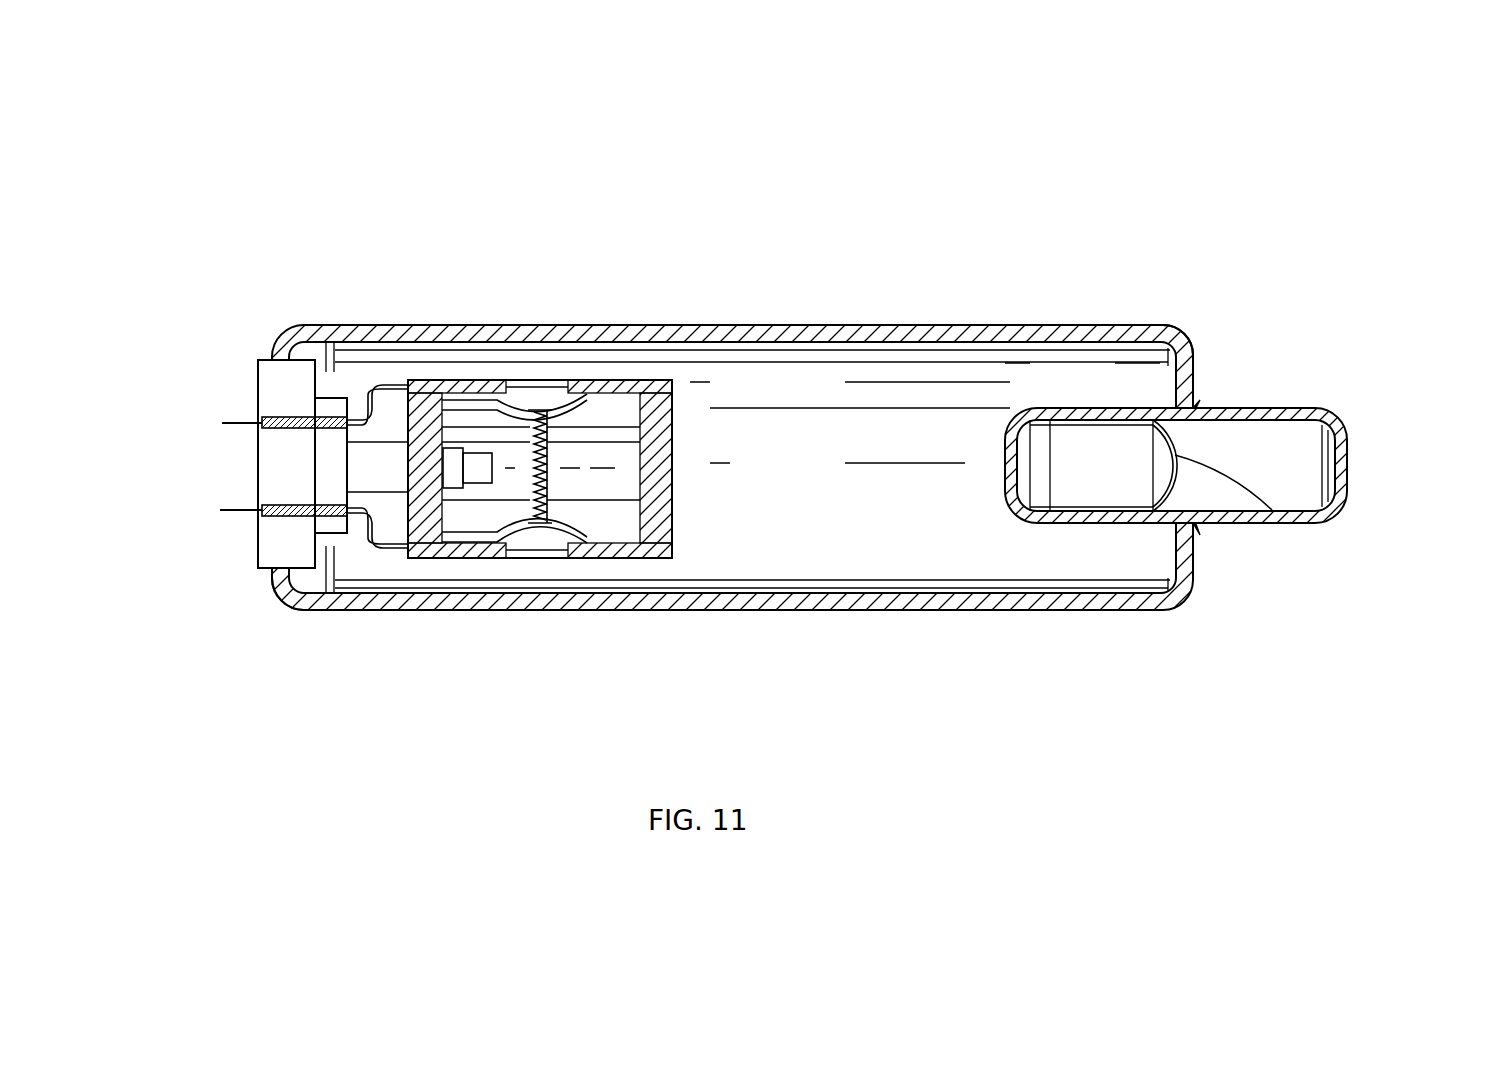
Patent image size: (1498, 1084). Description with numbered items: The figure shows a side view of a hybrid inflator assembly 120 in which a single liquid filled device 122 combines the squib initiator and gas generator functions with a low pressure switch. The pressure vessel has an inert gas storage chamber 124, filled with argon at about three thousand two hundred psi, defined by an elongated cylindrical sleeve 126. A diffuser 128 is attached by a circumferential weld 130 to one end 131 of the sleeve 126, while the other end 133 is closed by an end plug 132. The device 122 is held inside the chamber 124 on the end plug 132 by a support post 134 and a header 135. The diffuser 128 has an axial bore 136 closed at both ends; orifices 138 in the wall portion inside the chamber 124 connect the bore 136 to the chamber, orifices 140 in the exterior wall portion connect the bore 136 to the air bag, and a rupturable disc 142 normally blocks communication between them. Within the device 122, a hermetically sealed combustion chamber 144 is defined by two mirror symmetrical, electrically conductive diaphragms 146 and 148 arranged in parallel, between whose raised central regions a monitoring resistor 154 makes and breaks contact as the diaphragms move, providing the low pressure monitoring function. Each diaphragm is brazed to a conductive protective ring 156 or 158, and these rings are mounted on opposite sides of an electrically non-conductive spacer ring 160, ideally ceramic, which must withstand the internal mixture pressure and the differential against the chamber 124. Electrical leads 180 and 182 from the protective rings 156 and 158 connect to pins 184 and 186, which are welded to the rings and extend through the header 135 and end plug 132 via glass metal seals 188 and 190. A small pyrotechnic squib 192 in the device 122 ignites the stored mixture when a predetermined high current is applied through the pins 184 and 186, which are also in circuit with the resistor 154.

The hybrid inflator assembly 120 is at (797, 312).
The single liquid filled device 122 is at (620, 378).
The inert gas storage chamber 124 is at (970, 540).
The elongated cylindrical sleeve 126 is at (1008, 324).
The diffuser 128 is at (1352, 472).
The circumferential weld 130 is at (1200, 540).
The end of sleeve 131 is at (1183, 335).
The end plug 132 is at (255, 440).
The other end of sleeve 133 is at (280, 596).
The support post 134 is at (352, 398).
The header 135 is at (330, 463).
The axial bore 136 is at (1140, 505).
The orifices 138 is at (1075, 410).
The orifices 140 is at (1287, 408).
The rupturable disc 142 is at (1280, 517).
The combustion chamber 144 is at (462, 545).
The first diaphragm 146 is at (660, 408).
The second diaphragm 148 is at (645, 522).
The monitoring resistor 154 is at (547, 410).
The protective plate or ring 156 is at (650, 560).
The protective plate or ring 158 is at (455, 380).
The electrically non-conductive spacer ring 160 is at (660, 468).
The electrical lead 180 is at (383, 556).
The electrical lead 182 is at (383, 385).
The pin 184 is at (222, 510).
The pin 186 is at (222, 423).
The glass metal seal 188 is at (280, 517).
The glass metal seal 190 is at (273, 413).
The squib 192 is at (478, 476).